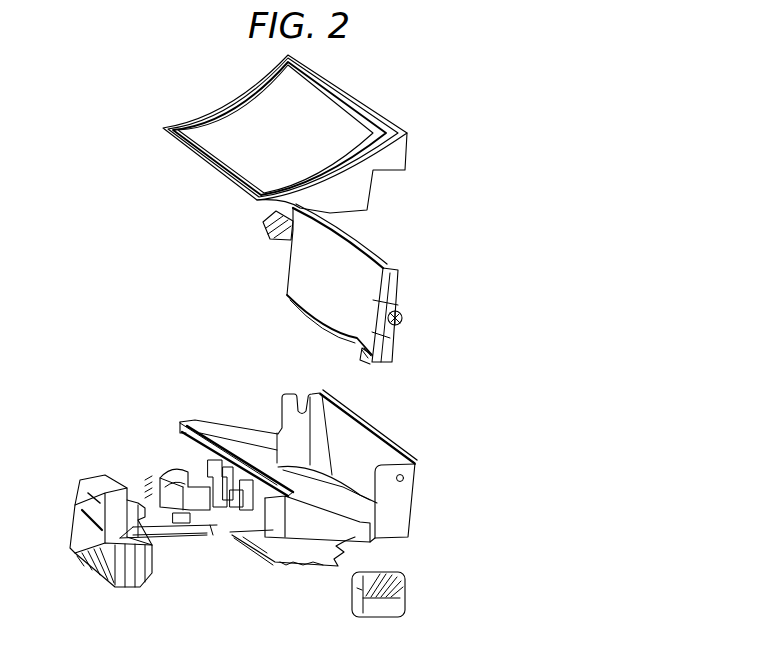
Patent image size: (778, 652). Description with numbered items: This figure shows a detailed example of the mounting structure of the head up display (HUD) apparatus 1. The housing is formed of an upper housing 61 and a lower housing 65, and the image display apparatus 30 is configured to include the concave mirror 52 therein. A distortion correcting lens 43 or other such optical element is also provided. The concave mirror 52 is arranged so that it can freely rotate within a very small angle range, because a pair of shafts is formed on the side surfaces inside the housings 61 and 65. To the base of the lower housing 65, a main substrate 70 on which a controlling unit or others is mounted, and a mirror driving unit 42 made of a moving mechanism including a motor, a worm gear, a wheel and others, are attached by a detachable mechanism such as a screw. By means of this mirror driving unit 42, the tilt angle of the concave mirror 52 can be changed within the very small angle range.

The HUD apparatus 1 is at (127, 200).
The housing 61 is at (400, 153).
The concave mirror 52 is at (288, 275).
The image display apparatus 30 is at (93, 475).
The distortion correcting lens 43 is at (170, 480).
The lower housing 65 is at (403, 501).
The main substrate 70 is at (272, 563).
The mirror driving unit 42 is at (408, 597).